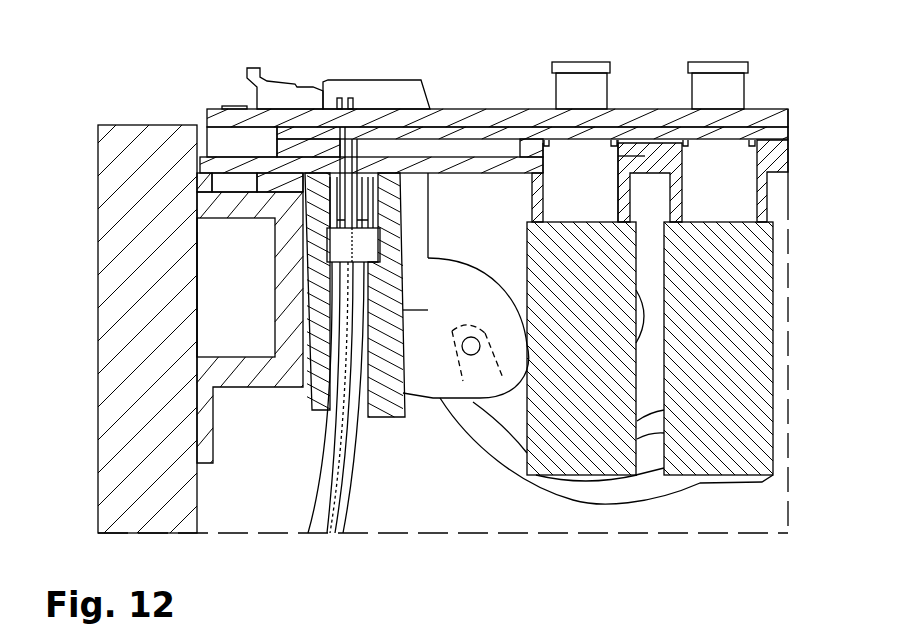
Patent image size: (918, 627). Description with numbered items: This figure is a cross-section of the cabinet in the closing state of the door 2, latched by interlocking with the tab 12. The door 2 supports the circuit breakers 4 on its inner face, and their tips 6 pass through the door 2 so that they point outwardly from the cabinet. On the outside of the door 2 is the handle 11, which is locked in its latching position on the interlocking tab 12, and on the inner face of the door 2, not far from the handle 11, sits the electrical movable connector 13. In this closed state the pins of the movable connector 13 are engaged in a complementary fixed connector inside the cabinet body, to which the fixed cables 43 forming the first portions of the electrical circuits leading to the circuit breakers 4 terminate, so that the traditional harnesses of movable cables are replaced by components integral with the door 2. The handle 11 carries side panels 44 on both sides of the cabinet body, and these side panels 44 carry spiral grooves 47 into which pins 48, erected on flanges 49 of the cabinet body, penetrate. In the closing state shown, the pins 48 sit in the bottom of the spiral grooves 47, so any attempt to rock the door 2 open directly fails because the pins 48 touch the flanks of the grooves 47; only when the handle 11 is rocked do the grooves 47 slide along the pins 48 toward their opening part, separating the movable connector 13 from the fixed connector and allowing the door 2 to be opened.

The door 2 is at (489, 107).
The circuit breakers 4 is at (779, 430).
The tips 6 is at (575, 83).
The handle 11 is at (273, 92).
The interlocking tab 12 is at (392, 95).
The electrical movable connector 13 is at (337, 182).
The fixed cables 43 is at (333, 523).
The side panels 44 is at (626, 507).
The spiral grooves 47 is at (508, 425).
The pins 48 is at (471, 355).
The flanges 49 is at (428, 383).